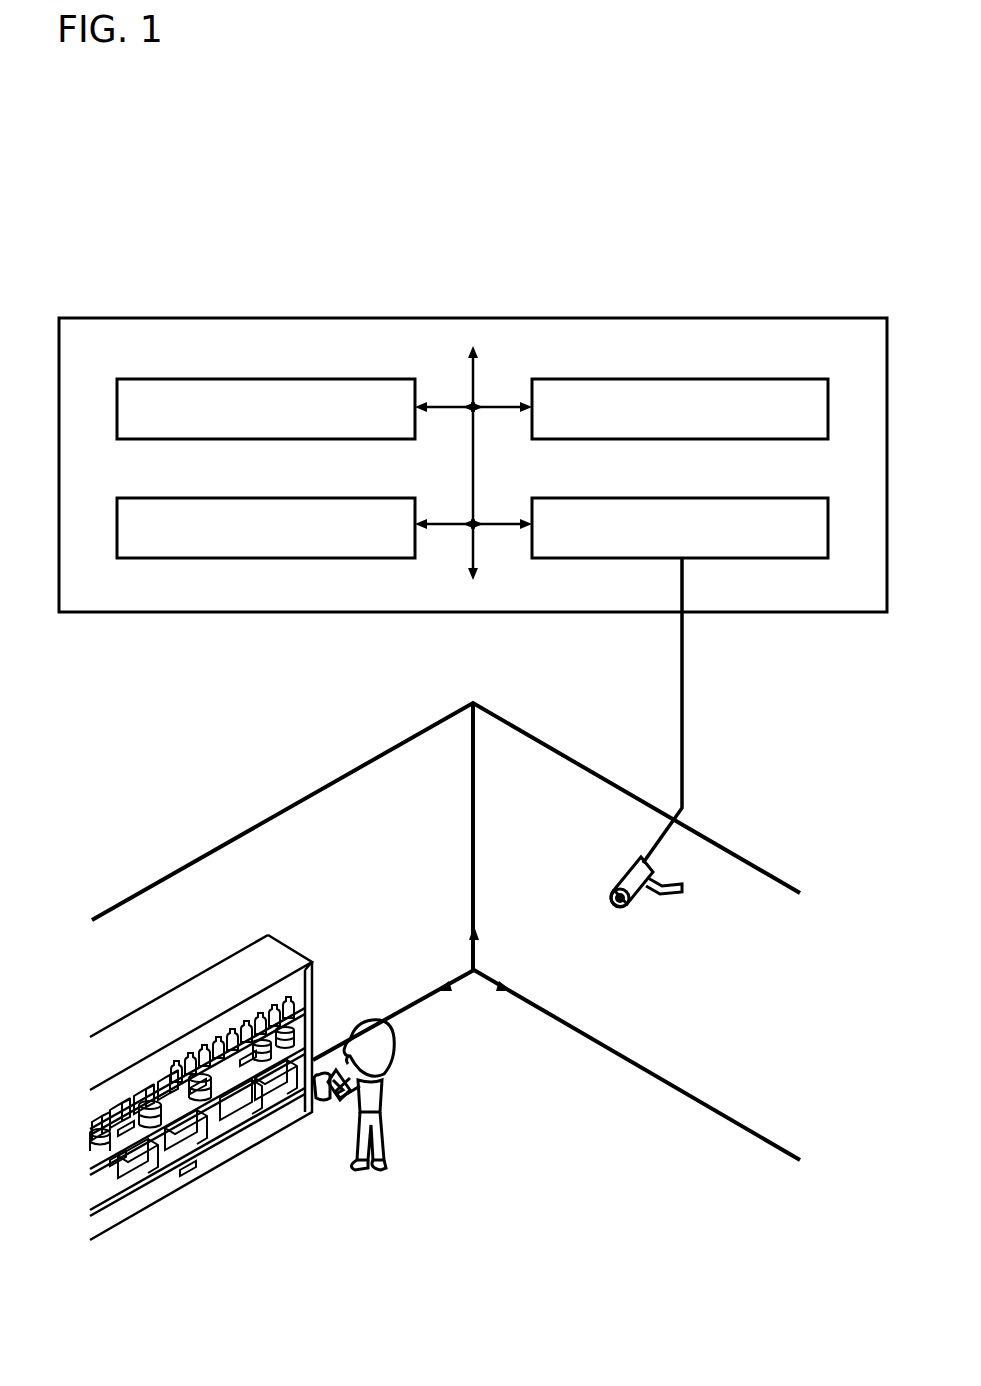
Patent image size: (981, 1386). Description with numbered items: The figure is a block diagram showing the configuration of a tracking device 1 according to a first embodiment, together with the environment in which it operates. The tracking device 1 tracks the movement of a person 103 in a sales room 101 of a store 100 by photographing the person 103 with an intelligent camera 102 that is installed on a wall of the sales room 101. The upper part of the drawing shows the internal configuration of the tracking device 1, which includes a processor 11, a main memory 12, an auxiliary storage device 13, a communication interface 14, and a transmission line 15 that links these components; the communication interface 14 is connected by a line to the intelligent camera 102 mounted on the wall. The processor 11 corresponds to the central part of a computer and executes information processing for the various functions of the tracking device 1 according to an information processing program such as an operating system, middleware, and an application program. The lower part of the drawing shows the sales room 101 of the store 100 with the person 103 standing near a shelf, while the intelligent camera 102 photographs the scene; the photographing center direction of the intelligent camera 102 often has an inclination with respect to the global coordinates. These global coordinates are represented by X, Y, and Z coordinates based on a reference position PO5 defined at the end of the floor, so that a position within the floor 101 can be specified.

The tracking device 1 is at (856, 316).
The processor 11 is at (325, 378).
The main memory 12 is at (325, 497).
The auxiliary storage device 13 is at (738, 377).
The communication interface 14 is at (738, 497).
The transmission line 15 is at (481, 377).
The store 100 is at (314, 792).
The sales room 101 is at (560, 1150).
The intelligent camera 102 is at (643, 903).
The person 103 is at (381, 1097).
The reference position PO5 is at (462, 966).